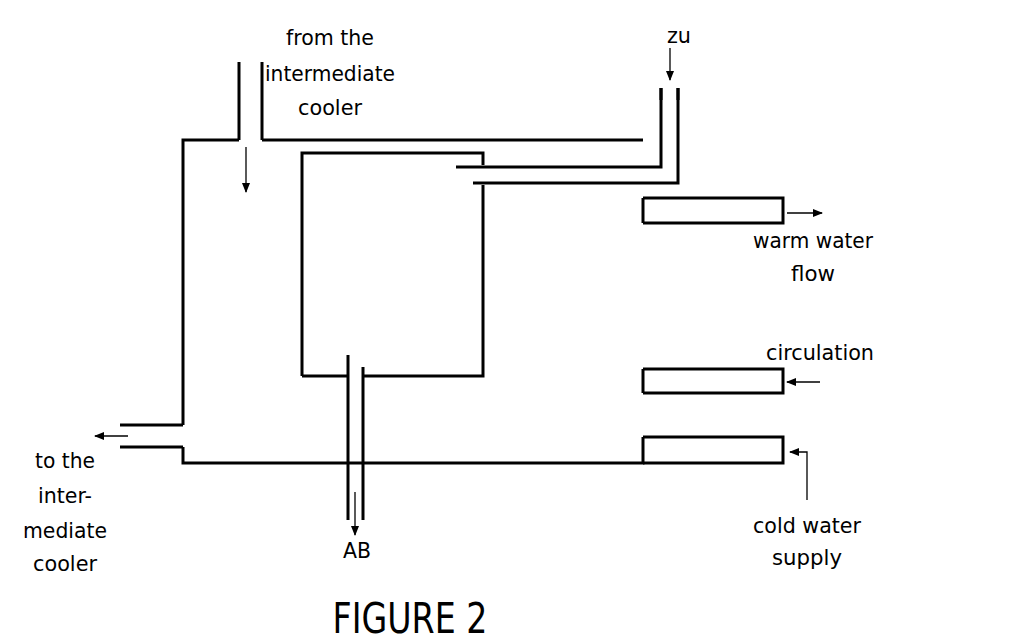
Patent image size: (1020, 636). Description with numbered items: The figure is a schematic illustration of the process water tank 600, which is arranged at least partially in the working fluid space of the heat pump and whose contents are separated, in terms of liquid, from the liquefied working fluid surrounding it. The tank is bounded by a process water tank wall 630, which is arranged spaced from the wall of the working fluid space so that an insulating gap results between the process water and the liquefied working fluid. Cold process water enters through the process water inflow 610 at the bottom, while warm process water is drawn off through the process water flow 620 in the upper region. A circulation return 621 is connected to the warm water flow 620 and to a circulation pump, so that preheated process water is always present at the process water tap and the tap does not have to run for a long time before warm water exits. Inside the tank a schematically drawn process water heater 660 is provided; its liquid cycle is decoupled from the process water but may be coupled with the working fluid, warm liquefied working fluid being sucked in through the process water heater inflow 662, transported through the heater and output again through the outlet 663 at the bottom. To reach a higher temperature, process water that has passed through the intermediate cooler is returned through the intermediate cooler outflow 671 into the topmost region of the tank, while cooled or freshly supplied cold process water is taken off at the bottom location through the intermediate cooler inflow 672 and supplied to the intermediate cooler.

The process water tank 600 is at (200, 283).
The process water inflow 610 is at (680, 465).
The process water flow 620 is at (745, 197).
The circulation return 621 is at (673, 368).
The process water tank wall 630 is at (477, 140).
The process water heater 660 is at (415, 153).
The process water heater inflow 662 is at (680, 103).
The outlet pipe 663 is at (365, 493).
The intermediate cooler outflow 671 is at (239, 100).
The intermediate cooler inflow 672 is at (145, 448).